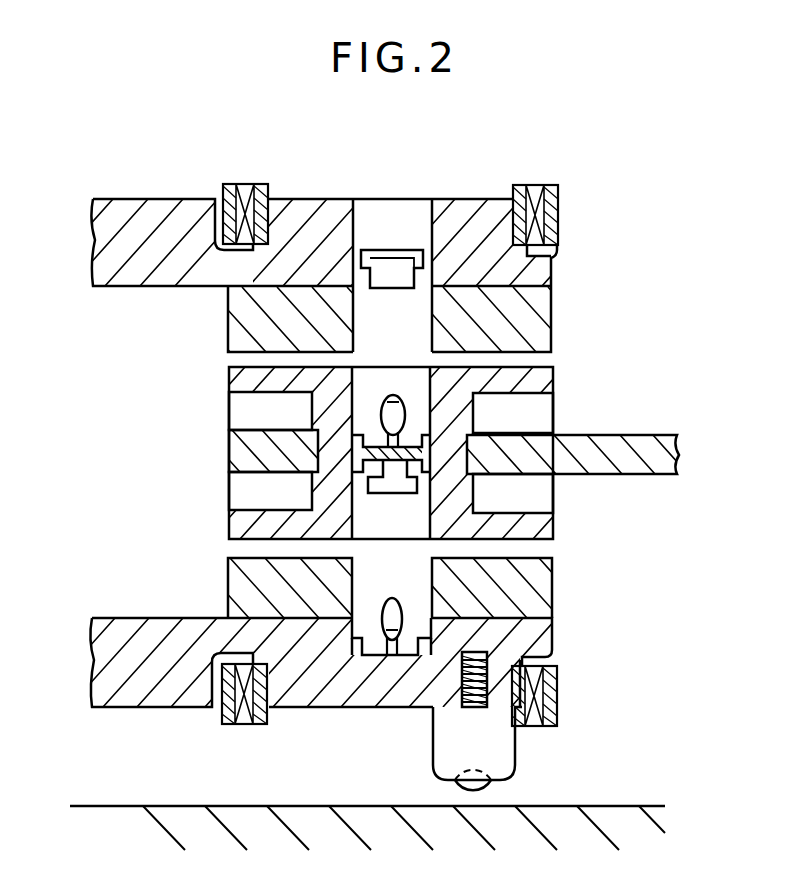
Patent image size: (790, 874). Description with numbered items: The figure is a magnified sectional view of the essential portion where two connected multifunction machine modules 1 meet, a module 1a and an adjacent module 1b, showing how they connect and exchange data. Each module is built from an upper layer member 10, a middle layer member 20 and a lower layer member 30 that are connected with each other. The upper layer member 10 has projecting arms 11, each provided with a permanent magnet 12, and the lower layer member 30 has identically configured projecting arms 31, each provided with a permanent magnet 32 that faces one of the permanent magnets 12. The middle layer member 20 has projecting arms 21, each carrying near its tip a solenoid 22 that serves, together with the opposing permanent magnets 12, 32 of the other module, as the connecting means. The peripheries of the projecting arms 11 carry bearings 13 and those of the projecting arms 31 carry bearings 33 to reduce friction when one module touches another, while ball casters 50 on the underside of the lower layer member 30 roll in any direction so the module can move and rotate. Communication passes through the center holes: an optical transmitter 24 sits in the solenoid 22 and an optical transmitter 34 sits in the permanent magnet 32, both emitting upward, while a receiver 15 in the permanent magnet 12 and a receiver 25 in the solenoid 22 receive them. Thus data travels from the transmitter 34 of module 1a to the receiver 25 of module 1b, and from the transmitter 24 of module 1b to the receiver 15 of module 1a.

The multifunction machine module 1 is at (507, 167).
The module 1a is at (140, 197).
The adjacent module 1b is at (653, 469).
The upper layer member 10 is at (574, 243).
The projecting arm 11 is at (468, 198).
The permanent magnet 12 is at (553, 333).
The bearing 13 is at (256, 182).
The receiver 15 is at (400, 289).
The middle layer member 20 is at (208, 443).
The projecting arm 21 is at (232, 462).
The solenoid 22 is at (234, 410).
The optical transmitter 24 is at (400, 398).
The receiver 25 is at (401, 494).
The lower layer member 30 is at (568, 628).
The projecting arm 31 is at (315, 708).
The permanent magnet 32 is at (544, 599).
The bearing 33 is at (559, 690).
The optical transmitter 34 is at (403, 603).
The ball caster 50 is at (516, 750).